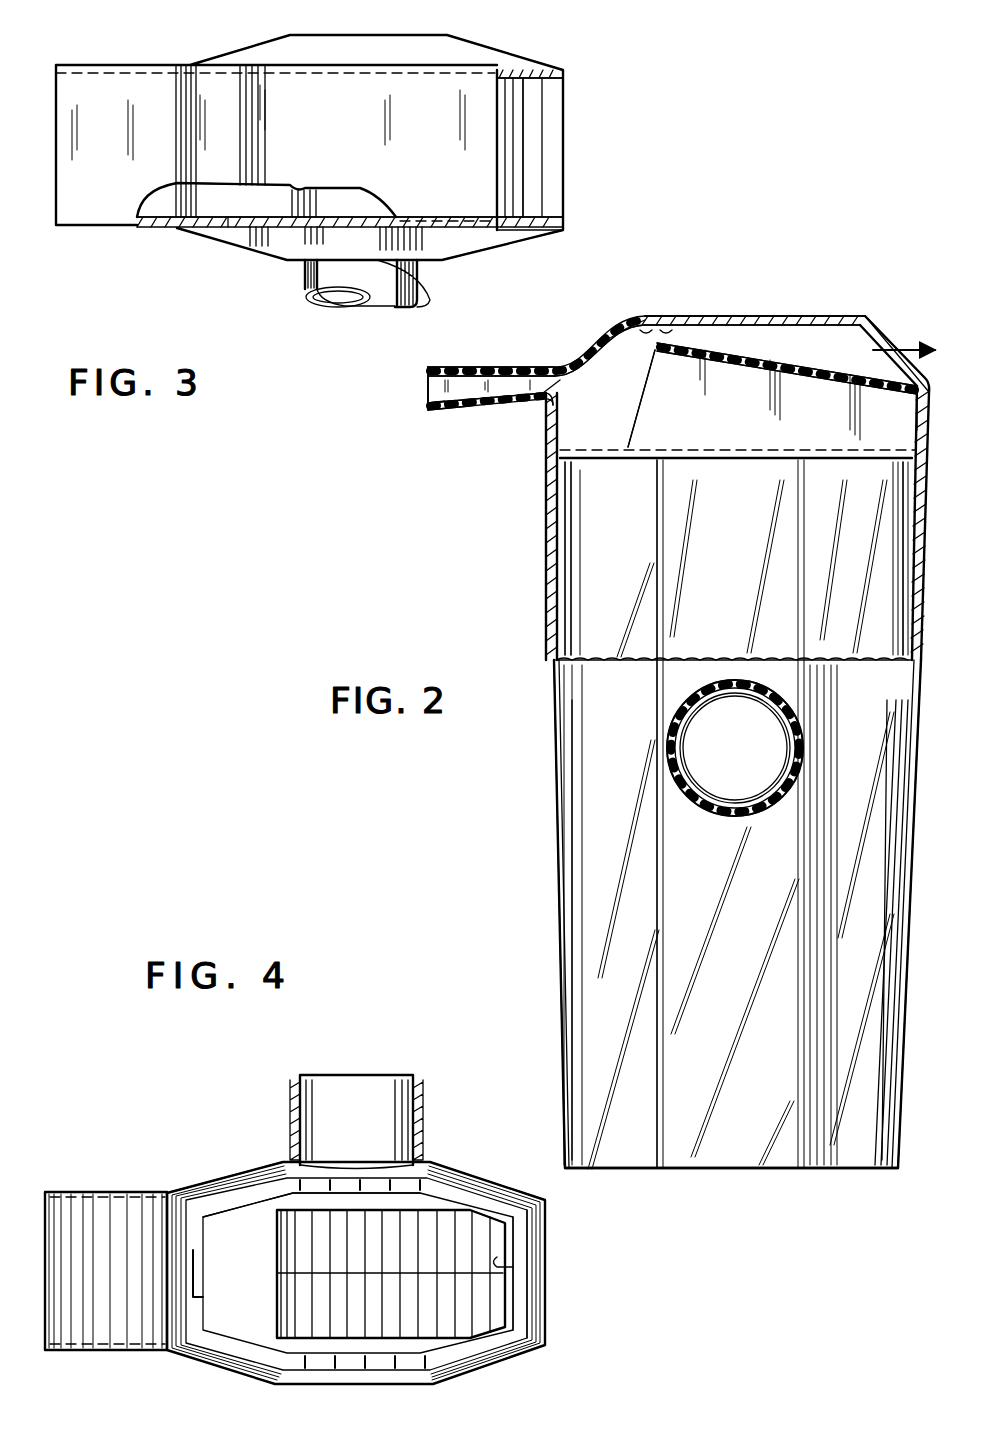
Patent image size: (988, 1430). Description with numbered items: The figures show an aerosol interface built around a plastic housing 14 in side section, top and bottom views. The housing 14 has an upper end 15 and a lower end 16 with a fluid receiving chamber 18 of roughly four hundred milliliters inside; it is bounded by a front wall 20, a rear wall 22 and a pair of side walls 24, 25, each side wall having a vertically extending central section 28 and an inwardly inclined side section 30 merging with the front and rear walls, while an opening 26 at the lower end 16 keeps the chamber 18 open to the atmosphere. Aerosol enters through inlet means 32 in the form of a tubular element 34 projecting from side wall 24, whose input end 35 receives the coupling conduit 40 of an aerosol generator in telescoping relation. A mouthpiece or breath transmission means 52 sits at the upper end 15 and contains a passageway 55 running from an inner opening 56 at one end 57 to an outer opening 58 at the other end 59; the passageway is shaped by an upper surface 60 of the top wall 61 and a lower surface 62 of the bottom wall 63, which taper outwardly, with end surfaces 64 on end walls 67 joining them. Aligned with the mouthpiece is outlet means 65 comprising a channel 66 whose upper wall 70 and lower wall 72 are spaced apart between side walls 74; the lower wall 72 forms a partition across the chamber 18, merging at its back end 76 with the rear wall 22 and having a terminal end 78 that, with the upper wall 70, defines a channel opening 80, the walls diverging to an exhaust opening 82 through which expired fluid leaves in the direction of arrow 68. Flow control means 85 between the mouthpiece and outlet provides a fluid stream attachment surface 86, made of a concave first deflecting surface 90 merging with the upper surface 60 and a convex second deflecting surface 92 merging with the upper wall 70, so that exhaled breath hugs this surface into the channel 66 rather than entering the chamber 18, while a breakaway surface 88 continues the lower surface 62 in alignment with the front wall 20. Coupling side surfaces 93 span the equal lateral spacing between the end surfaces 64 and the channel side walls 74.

In FIG. 3, the housing 14 is at (522, 243).
In FIG. 2, the housing 14 is at (550, 808).
In FIG. 4, the housing 14 is at (486, 1170).
In FIG. 2, the upper end 15 is at (546, 447).
In FIG. 2, the lower end 16 is at (826, 1172).
In FIG. 4, the lower end 16 is at (535, 1227).
In FIG. 2, the fluid receiving chamber 18 is at (702, 632).
In FIG. 2, the front wall 20 is at (546, 642).
In FIG. 4, the front wall 20 is at (167, 1215).
In FIG. 2, the rear wall 22 is at (916, 662).
In FIG. 4, the rear wall 22 is at (550, 1346).
In FIG. 3, the side wall 24 is at (300, 265).
In FIG. 2, the side wall 24 is at (657, 960).
In FIG. 3, the side wall 25 is at (450, 38).
In FIG. 4, the opening 26 is at (520, 1275).
In FIG. 3, the central section 28 is at (380, 36).
In FIG. 2, the central section 28 is at (790, 652).
In FIG. 4, the central section 28 is at (430, 1163).
In FIG. 3, the inclined side section 30 is at (232, 62).
In FIG. 2, the inclined side section 30 is at (578, 578).
In FIG. 4, the inclined side section 30 is at (222, 1165).
In FIG. 3, the inlet means 32 is at (347, 318).
In FIG. 2, the inlet means 32 is at (722, 814).
In FIG. 4, the inlet means 32 is at (362, 1072).
In FIG. 3, the tubular element 34 is at (325, 306).
In FIG. 2, the tubular element 34 is at (760, 818).
In FIG. 4, the input end 35 is at (318, 1077).
In FIG. 2, the coupling conduit 40 is at (700, 808).
In FIG. 4, the coupling conduit 40 is at (420, 1102).
In FIG. 3, the breath transmission means 52 is at (105, 233).
In FIG. 2, the breath transmission means 52 is at (478, 366).
In FIG. 4, the breath transmission means 52 is at (88, 1190).
In FIG. 2, the passageway 55 is at (515, 380).
In FIG. 2, the inner opening 56 is at (575, 381).
In FIG. 2, the end 57 is at (545, 403).
In FIG. 2, the outer opening 58 is at (428, 400).
In FIG. 3, the end 59 is at (58, 228).
In FIG. 2, the end 59 is at (430, 412).
In FIG. 4, the end 59 is at (46, 1200).
In FIG. 2, the upper surface 60 is at (500, 376).
In FIG. 3, the top wall 61 is at (115, 82).
In FIG. 2, the top wall 61 is at (450, 365).
In FIG. 3, the lower surface 62 is at (150, 226).
In FIG. 2, the lower surface 62 is at (470, 404).
In FIG. 2, the bottom wall 63 is at (455, 410).
In FIG. 4, the bottom wall 63 is at (88, 1352).
In FIG. 3, the end surface 64 is at (168, 228).
In FIG. 2, the end surface 64 is at (428, 380).
In FIG. 3, the outlet means 65 is at (550, 150).
In FIG. 2, the outlet means 65 is at (872, 342).
In FIG. 2, the channel 66 is at (805, 340).
In FIG. 3, the end wall 67 is at (85, 62).
In FIG. 4, the end wall 67 is at (115, 1192).
In FIG. 2, the arrow 68 is at (900, 348).
In FIG. 2, the upper wall 70 is at (780, 330).
In FIG. 3, the lower wall 72 is at (540, 172).
In FIG. 2, the lower wall 72 is at (845, 376).
In FIG. 4, the lower wall 72 is at (510, 1312).
In FIG. 3, the side wall 74 is at (555, 78).
In FIG. 2, the side wall 74 is at (855, 332).
In FIG. 2, the back end 76 is at (920, 402).
In FIG. 2, the terminal end 78 is at (656, 353).
In FIG. 4, the terminal end 78 is at (272, 1220).
In FIG. 2, the channel opening 80 is at (668, 335).
In FIG. 2, the exhaust opening 82 is at (915, 372).
In FIG. 2, the flow control means 85 is at (622, 320).
In FIG. 2, the fluid stream attachment surface 86 is at (645, 328).
In FIG. 3, the breakaway surface 88 is at (195, 230).
In FIG. 2, the breakaway surface 88 is at (546, 422).
In FIG. 2, the first deflecting surface 90 is at (610, 356).
In FIG. 3, the second deflecting surface 92 is at (230, 231).
In FIG. 2, the second deflecting surface 92 is at (680, 330).
In FIG. 2, the coupling side surface 93 is at (615, 452).